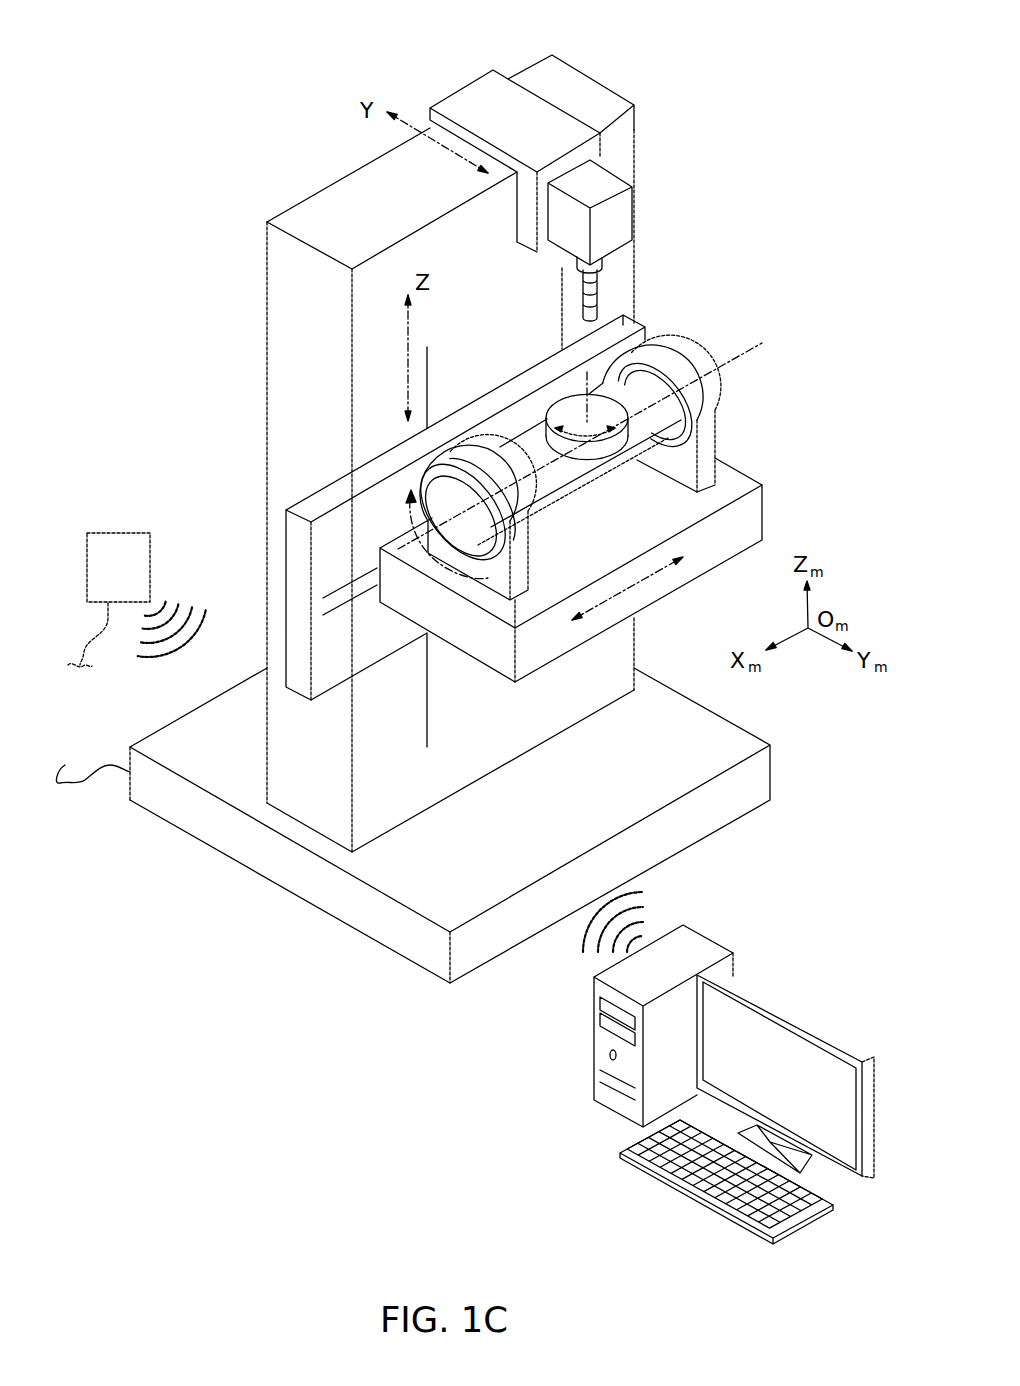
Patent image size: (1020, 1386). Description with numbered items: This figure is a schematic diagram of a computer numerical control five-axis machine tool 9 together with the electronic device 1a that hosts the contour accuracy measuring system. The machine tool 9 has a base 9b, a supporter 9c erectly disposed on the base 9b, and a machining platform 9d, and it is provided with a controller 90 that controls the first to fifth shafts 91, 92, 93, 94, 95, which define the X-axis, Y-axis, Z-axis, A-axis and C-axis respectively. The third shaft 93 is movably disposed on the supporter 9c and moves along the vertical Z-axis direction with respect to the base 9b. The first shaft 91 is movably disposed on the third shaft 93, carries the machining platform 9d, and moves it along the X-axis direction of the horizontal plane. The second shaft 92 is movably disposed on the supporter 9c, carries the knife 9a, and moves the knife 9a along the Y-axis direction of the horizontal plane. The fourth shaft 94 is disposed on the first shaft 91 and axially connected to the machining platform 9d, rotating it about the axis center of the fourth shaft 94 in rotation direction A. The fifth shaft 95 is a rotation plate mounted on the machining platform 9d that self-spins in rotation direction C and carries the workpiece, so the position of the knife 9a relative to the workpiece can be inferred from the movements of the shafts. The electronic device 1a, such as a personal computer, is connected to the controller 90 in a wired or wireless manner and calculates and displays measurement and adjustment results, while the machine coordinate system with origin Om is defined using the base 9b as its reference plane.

The machine tool 9 is at (666, 60).
The knife 9a is at (588, 292).
The base 9b is at (187, 812).
The supporter 9c is at (283, 272).
The machining platform 9d is at (652, 418).
The controller 90 is at (120, 534).
The first shaft 91 is at (733, 485).
The second shaft 92 is at (620, 210).
The third shaft 93 is at (310, 503).
The fourth shaft 94 is at (440, 488).
The fifth shaft 95 is at (612, 408).
The electronic device 1a is at (790, 955).